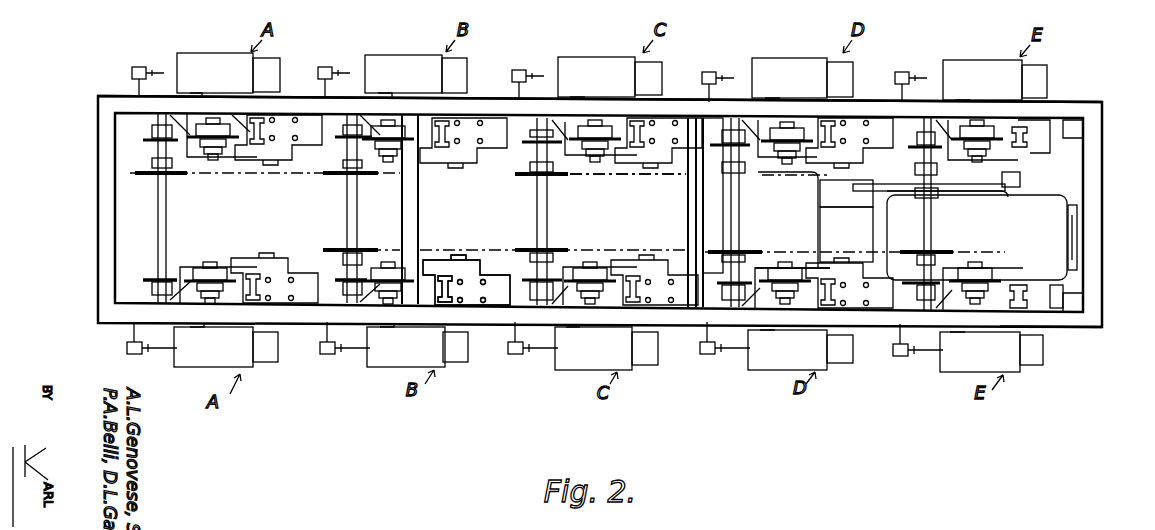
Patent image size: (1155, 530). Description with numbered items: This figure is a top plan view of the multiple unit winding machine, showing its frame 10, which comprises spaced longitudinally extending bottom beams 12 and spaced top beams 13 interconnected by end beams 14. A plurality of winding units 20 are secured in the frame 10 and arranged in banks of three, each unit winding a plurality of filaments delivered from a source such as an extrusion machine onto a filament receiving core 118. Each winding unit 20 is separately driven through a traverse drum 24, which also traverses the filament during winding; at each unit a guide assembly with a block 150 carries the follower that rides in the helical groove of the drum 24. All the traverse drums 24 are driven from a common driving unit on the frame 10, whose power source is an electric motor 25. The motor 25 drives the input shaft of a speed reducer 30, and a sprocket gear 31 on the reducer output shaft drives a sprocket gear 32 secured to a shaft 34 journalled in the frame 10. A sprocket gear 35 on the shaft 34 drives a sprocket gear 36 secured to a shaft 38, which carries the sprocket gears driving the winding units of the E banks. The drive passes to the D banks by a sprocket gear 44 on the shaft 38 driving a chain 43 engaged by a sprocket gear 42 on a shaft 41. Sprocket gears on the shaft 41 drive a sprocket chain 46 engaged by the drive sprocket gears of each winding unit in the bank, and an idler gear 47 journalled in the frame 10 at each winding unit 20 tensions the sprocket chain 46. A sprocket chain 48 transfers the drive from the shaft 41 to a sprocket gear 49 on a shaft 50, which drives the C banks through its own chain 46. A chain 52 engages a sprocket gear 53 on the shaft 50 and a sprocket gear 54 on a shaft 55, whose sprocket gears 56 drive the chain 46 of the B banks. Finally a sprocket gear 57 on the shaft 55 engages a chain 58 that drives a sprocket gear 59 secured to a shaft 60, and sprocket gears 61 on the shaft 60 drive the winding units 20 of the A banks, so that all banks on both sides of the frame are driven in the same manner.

The frame 10 is at (549, 53).
The bottom beams 12 is at (1067, 323).
The top beams 13 is at (1058, 108).
The end beams 14 is at (104, 196).
The winding units 20 is at (277, 177).
The traverse drum 24 is at (204, 62).
The electric motor 25 is at (830, 234).
The speed reducer 30 is at (1020, 234).
The sprocket gear 31 is at (1040, 190).
The sprocket gear 32 is at (992, 195).
The shaft 34 is at (924, 236).
The sprocket gear 35 is at (905, 183).
The sprocket gear 36 is at (846, 193).
The shaft 38 is at (932, 198).
The shaft 41 is at (740, 205).
The sprocket gear 42 is at (760, 250).
The chain 43 is at (800, 258).
The sprocket gear 44 is at (950, 252).
The sprocket chain 46 is at (210, 120).
The idler gear 47 is at (152, 133).
The sprocket chain 48 is at (663, 175).
The sprocket gear 49 is at (520, 175).
The shaft 50 is at (548, 222).
The chain 52 is at (462, 252).
The sprocket gear 53 is at (568, 250).
The sprocket gear 54 is at (366, 250).
The shaft 55 is at (347, 206).
The sprocket gears 56 is at (340, 279).
The sprocket gear 57 is at (366, 178).
The chain 58 is at (232, 178).
The sprocket gear 59 is at (178, 178).
The shaft 60 is at (158, 198).
The sprocket gears 61 is at (156, 279).
The core 118 is at (270, 62).
The block 150 is at (132, 68).